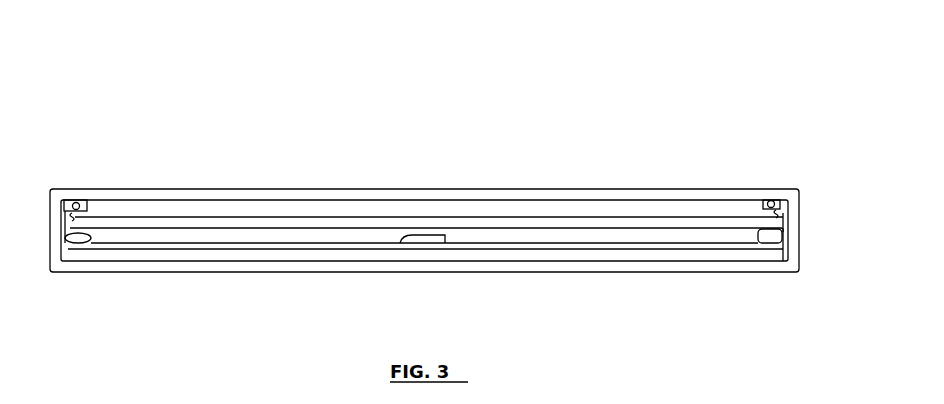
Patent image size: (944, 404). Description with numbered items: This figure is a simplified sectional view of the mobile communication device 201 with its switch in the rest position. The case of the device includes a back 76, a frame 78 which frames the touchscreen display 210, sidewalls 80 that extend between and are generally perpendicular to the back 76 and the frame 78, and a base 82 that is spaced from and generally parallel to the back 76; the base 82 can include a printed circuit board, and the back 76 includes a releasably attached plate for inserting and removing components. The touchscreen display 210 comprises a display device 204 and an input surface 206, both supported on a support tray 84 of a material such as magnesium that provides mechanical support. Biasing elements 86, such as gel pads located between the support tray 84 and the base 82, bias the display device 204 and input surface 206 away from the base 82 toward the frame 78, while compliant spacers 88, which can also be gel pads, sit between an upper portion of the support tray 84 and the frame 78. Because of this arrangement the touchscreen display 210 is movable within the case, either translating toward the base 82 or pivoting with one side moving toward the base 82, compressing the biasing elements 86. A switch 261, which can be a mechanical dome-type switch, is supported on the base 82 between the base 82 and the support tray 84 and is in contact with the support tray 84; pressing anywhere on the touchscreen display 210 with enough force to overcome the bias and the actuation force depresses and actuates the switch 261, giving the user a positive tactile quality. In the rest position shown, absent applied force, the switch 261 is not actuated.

The device 201 is at (766, 104).
The touchscreen display 210 is at (167, 186).
The input surface 206 is at (402, 200).
The display device 204 is at (333, 208).
The base 82 is at (267, 250).
The back 76 is at (487, 264).
The frame 78 is at (80, 199).
The compliant spacers 88 is at (776, 199).
The support tray 84 is at (790, 213).
The biasing elements 86 is at (762, 240).
The switch 261 is at (420, 241).
The sidewalls 80 is at (798, 274).